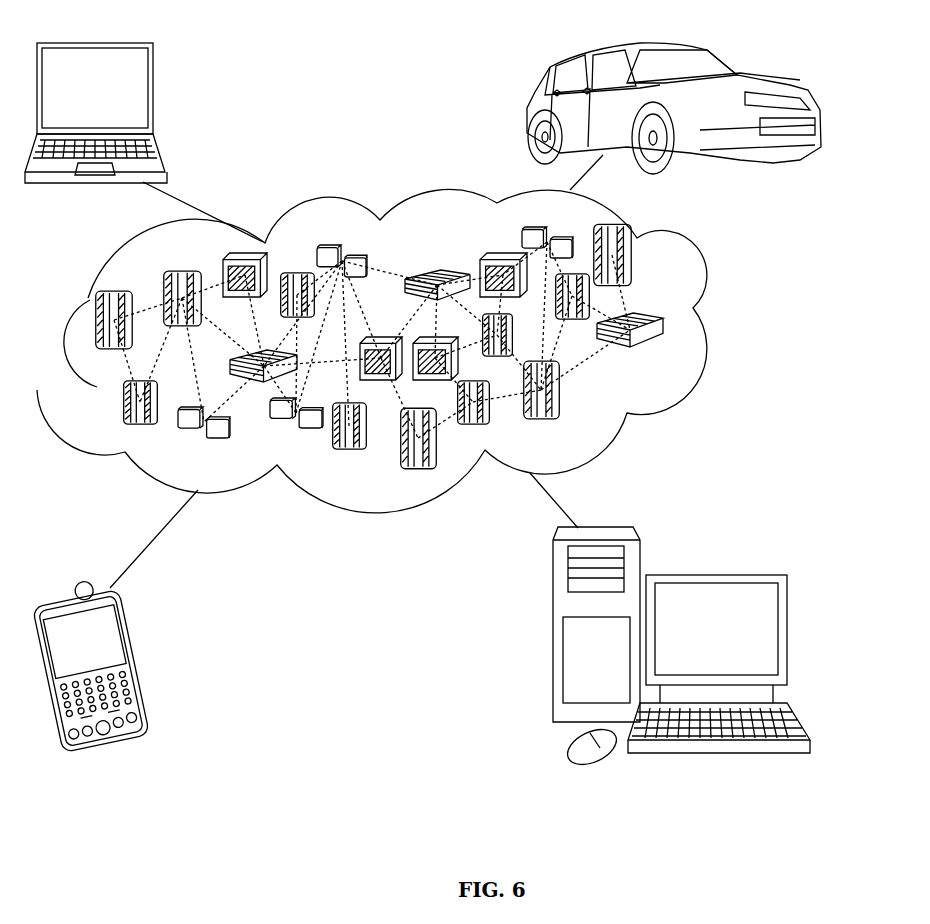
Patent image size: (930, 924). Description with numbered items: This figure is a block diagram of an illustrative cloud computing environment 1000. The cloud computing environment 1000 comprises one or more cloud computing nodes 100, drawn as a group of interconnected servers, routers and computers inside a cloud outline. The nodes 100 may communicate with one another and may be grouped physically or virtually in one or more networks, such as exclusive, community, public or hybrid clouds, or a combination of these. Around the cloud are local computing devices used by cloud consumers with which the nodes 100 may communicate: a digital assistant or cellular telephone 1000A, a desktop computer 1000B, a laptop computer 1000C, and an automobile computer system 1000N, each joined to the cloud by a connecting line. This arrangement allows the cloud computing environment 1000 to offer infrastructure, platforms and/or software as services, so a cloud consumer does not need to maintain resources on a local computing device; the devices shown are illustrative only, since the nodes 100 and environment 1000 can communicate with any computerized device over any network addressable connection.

The cloud computing environment 1000 is at (717, 327).
The cloud computing nodes 100 is at (665, 354).
The cellular telephone 1000A is at (146, 656).
The desktop computer 1000B is at (713, 573).
The laptop computer 1000C is at (153, 95).
The automobile computer system 1000N is at (530, 112).